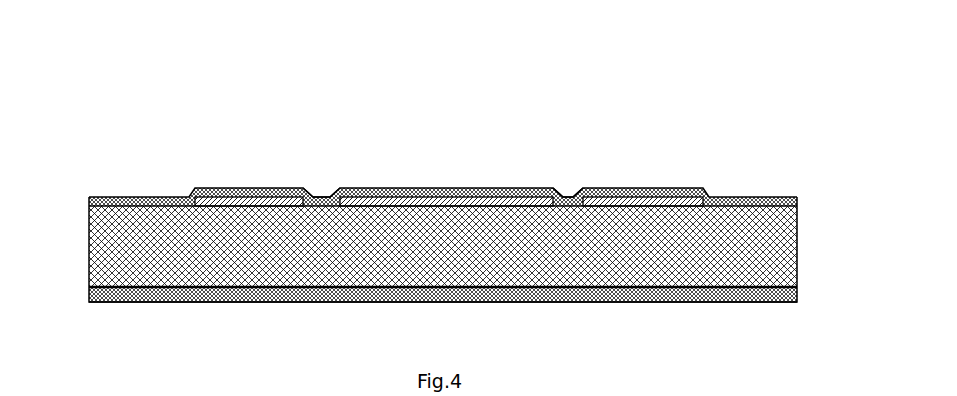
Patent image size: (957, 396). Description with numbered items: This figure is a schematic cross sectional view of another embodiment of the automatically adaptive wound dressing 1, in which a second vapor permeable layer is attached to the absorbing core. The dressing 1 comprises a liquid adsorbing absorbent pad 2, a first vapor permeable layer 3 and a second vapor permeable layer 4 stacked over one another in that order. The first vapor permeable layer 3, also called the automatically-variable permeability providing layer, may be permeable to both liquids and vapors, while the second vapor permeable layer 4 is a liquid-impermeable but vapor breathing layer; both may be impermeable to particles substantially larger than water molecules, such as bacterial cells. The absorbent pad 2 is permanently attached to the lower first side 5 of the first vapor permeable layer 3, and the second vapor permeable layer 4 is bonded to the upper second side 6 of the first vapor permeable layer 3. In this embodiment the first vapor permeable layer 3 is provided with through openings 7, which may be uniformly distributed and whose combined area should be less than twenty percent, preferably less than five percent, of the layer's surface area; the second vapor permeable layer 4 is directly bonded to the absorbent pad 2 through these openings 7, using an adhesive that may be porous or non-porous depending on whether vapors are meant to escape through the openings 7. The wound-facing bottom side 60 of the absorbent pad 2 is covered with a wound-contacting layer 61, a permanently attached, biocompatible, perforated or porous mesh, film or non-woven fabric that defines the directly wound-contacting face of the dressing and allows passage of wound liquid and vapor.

The automatically adaptive wound dressing 1 is at (712, 149).
The absorbent pad 2 is at (776, 268).
The first vapor permeable layer 3 is at (258, 190).
The second vapor permeable layer 4 is at (797, 197).
The lower first side 5 is at (776, 212).
The upper second side 6 is at (444, 190).
The through openings 7 is at (322, 200).
The wound-facing bottom side 60 is at (89, 287).
The wound-contacting layer 61 is at (108, 303).